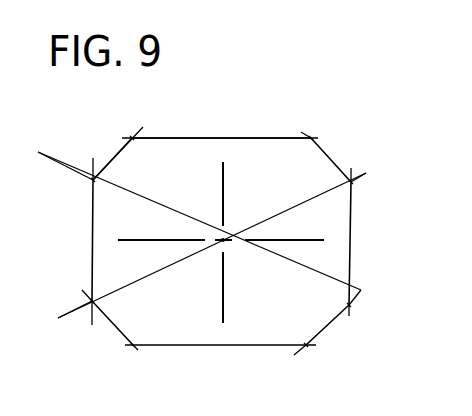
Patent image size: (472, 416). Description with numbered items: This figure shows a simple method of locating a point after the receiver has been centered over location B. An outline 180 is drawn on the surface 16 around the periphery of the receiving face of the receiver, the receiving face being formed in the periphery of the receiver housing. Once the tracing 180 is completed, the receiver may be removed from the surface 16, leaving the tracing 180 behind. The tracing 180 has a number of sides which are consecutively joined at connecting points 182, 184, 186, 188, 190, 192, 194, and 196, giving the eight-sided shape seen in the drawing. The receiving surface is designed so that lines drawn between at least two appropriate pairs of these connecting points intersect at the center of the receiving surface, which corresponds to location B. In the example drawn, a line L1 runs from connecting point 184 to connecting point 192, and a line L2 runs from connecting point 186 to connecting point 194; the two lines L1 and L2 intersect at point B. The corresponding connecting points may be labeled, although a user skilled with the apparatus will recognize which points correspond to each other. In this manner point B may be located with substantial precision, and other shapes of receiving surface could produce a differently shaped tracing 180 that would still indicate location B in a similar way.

The surface 16 is at (340, 75).
The outline 180 is at (252, 135).
The connecting point 182 is at (129, 348).
The connecting point 184 is at (88, 300).
The connecting point 186 is at (90, 181).
The connecting point 188 is at (125, 138).
The connecting point 190 is at (316, 131).
The connecting point 192 is at (356, 182).
The connecting point 194 is at (354, 304).
The connecting point 196 is at (309, 349).
The location B is at (228, 234).
The line L1 is at (133, 285).
The line L2 is at (138, 198).